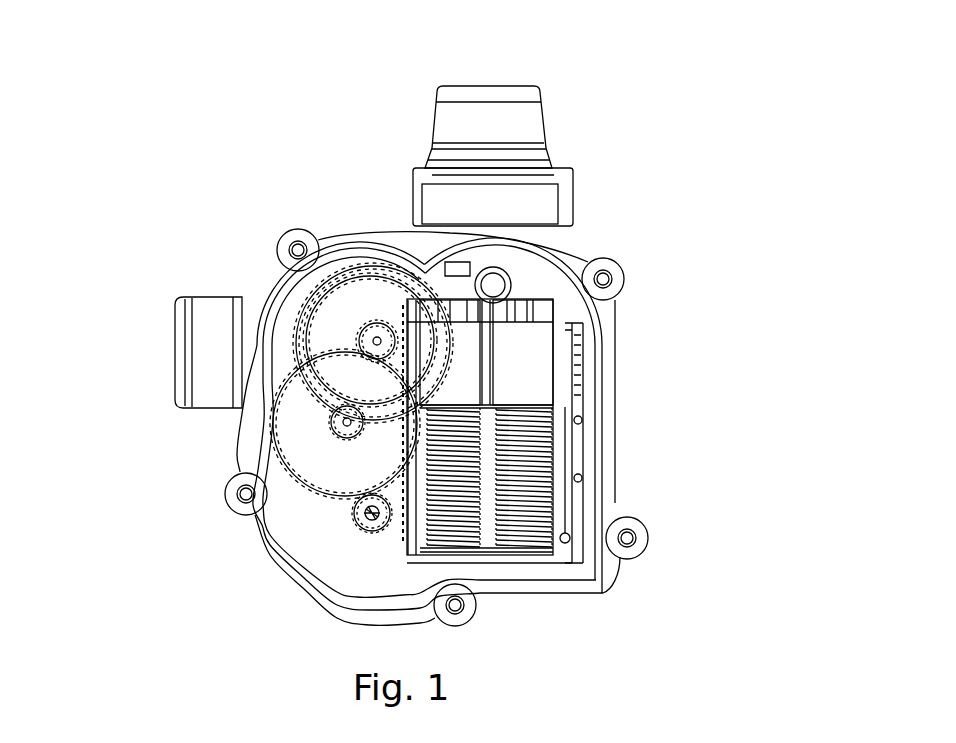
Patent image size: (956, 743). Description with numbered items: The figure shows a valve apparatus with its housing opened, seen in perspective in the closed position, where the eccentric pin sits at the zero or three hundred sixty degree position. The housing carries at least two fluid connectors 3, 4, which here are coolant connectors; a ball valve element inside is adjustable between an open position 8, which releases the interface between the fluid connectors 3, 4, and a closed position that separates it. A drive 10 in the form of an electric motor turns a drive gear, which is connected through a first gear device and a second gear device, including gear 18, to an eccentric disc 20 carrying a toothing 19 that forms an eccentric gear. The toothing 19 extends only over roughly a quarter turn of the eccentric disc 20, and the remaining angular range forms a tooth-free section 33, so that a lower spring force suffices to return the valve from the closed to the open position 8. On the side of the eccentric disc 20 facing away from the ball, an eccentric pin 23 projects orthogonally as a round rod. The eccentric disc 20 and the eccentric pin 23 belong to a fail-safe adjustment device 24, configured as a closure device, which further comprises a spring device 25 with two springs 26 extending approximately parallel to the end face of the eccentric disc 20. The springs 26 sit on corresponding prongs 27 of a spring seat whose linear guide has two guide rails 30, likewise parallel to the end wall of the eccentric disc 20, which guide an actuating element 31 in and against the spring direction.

The fluid connector 3 is at (498, 86).
The fluid connector 4 is at (175, 351).
The open position 8 is at (218, 165).
The drive 10 is at (316, 547).
The gear 18 is at (386, 345).
The toothing 19 is at (413, 301).
The eccentric disc 20 is at (538, 290).
The eccentric pin 23 is at (493, 283).
The fail-safe adjustment device 24 is at (695, 412).
The spring device 25 is at (562, 469).
The springs 26 is at (461, 549).
The prongs 27 is at (460, 506).
The guide rails 30 is at (568, 417).
The actuating element 31 is at (538, 360).
The tooth-free section 33 is at (457, 268).